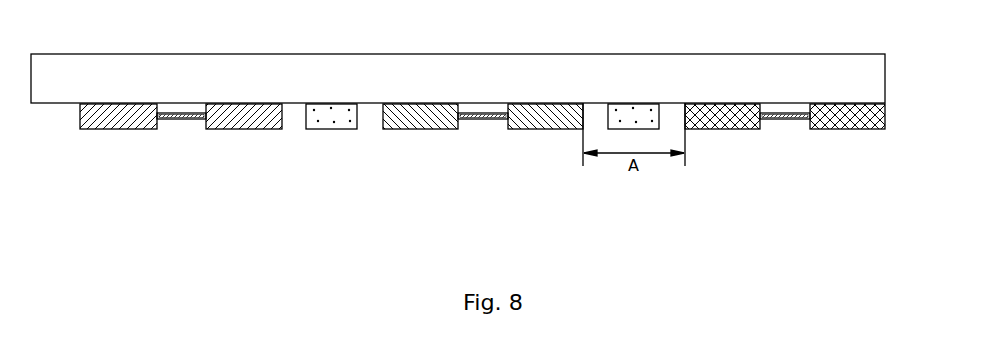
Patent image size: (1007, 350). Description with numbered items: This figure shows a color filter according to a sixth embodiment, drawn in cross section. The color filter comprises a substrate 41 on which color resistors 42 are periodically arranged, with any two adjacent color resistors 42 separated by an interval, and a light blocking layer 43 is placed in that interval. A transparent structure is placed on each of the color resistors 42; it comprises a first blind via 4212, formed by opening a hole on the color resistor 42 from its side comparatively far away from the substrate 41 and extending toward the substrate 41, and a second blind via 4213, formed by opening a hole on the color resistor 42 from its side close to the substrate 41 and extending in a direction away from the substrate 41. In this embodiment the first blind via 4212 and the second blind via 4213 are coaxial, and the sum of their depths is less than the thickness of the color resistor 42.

The substrate 41 is at (860, 90).
The color resistor 42 is at (862, 120).
The light blocking layer 43 is at (637, 103).
The first blind via 4212 is at (784, 122).
The second blind via 4213 is at (473, 112).